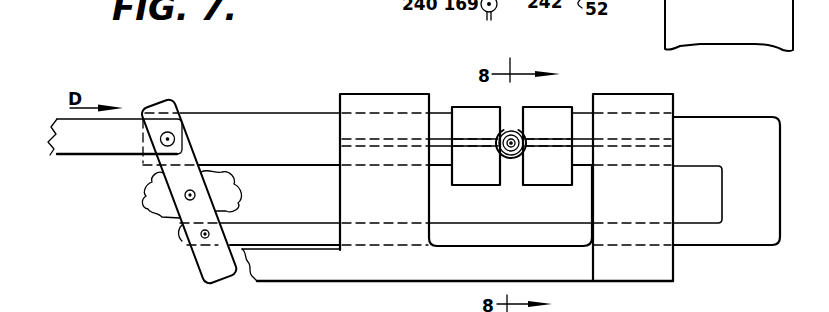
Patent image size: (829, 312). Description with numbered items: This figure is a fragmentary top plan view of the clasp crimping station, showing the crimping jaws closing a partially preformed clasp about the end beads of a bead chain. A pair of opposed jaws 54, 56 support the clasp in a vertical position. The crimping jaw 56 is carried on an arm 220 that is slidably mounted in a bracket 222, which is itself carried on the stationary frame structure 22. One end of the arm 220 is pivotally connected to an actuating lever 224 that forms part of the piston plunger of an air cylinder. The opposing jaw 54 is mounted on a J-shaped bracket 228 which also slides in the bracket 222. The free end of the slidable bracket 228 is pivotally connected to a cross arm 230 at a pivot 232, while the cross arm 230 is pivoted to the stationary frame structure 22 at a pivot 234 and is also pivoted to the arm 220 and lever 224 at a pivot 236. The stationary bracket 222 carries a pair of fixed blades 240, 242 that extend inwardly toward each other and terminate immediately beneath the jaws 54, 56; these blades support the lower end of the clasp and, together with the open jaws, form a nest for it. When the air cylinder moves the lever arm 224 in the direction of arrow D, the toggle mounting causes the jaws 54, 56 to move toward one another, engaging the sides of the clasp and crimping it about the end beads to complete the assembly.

The stationary frame structure 22 is at (147, 210).
The crimping jaw 54 is at (551, 107).
The crimping jaw 56 is at (487, 107).
The arm 220 is at (268, 113).
The bracket 222 is at (673, 270).
The actuating lever 224 is at (90, 157).
The J-shaped bracket 228 is at (713, 117).
The cross arm 230 is at (242, 194).
The pivotal connection 232 is at (203, 236).
The pivot 234 is at (194, 192).
The pivotal connection 236 is at (169, 138).
The fixed blade 240 is at (372, 139).
The fixed blade 242 is at (623, 138).